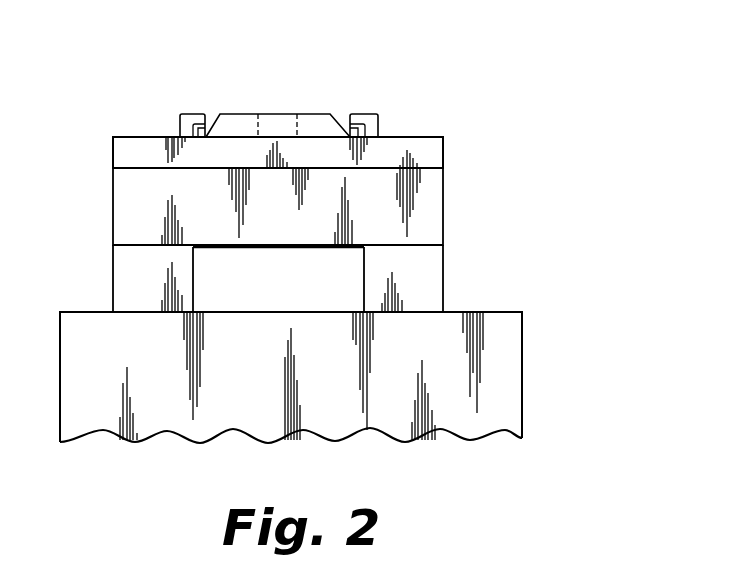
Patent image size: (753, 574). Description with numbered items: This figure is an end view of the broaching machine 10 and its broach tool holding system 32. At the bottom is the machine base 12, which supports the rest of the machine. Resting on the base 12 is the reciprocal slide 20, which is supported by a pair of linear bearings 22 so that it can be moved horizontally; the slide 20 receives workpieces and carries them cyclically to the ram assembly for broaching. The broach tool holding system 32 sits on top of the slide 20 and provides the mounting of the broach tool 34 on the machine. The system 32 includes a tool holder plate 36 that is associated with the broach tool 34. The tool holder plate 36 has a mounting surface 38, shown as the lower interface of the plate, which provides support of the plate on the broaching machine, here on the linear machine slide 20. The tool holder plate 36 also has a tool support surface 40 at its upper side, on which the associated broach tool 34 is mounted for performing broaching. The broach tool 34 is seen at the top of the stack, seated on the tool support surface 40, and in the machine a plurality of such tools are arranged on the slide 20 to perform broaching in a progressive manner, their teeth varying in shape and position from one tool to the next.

The broaching machine 10 is at (560, 349).
The base 12 is at (178, 412).
The slide 20 is at (423, 200).
The linear bearings 22 is at (143, 275).
The broach tool holding system 32 is at (284, 76).
The broach tool 34 is at (322, 113).
The tool holder plate 36 is at (452, 148).
The mounting surface 38 is at (147, 170).
The tool support surface 40 is at (341, 128).